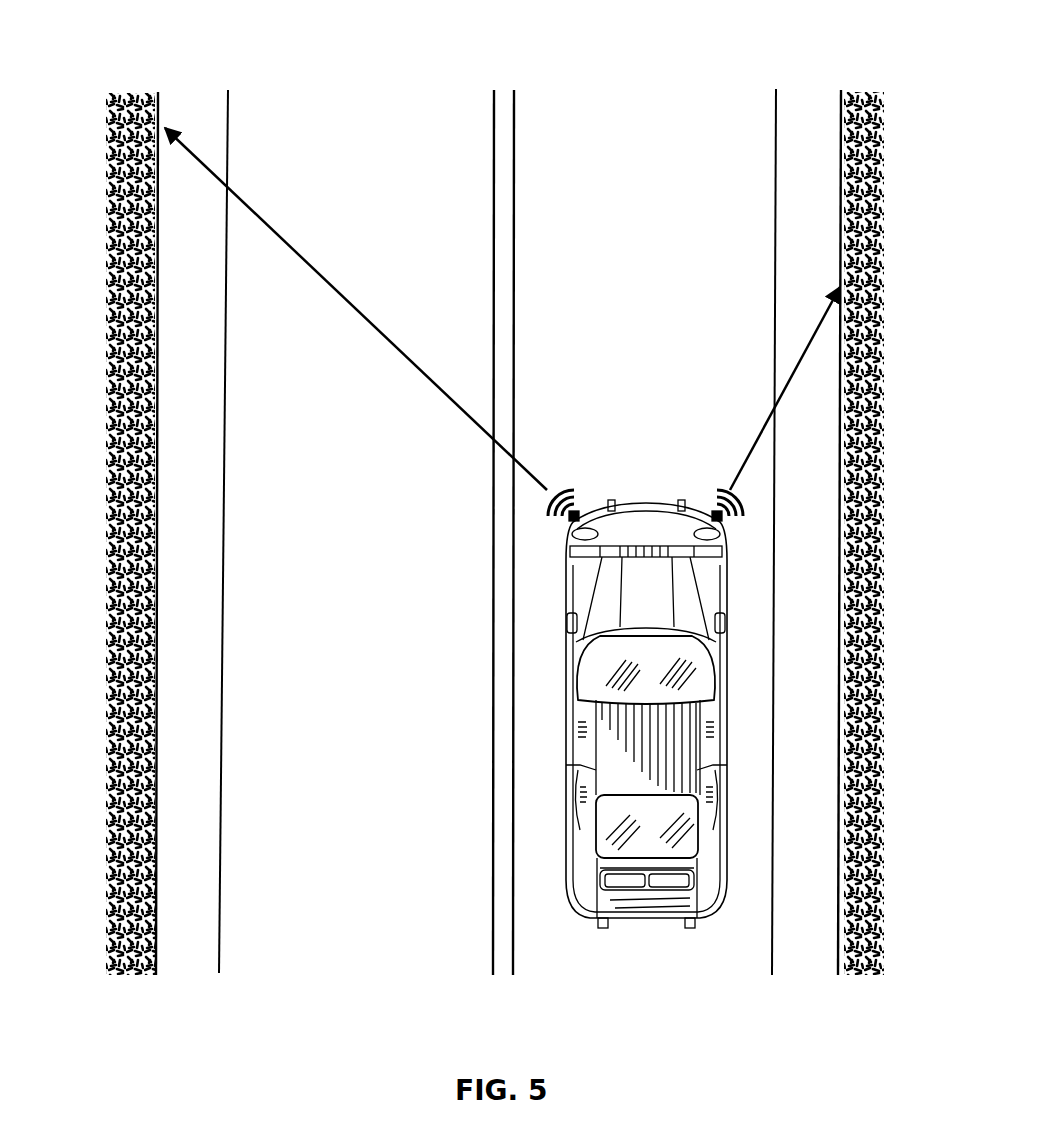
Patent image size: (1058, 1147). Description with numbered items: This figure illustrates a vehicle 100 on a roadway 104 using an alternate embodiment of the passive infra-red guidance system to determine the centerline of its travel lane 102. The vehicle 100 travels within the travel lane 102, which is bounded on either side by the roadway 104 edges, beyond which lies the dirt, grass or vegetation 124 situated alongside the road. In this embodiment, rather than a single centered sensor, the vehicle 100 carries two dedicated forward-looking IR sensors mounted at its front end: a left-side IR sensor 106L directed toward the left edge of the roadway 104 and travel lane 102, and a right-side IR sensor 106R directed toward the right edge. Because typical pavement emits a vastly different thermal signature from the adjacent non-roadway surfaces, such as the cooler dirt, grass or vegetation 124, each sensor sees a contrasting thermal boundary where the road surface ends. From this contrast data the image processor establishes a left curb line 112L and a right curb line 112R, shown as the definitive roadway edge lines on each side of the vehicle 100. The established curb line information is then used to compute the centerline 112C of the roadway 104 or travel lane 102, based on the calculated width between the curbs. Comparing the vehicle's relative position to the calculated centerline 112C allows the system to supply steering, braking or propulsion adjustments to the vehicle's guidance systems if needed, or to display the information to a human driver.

The vehicle 100 is at (588, 917).
The travel lane 102 is at (748, 727).
The roadway 104 is at (823, 70).
The left-side IR sensor 106L is at (590, 508).
The right-side IR sensor 106R is at (705, 508).
The left curb line 112L is at (172, 100).
The centerline 112C is at (488, 305).
The right curb line 112R is at (832, 128).
The dirt/grass/vegetation 124 is at (97, 412).